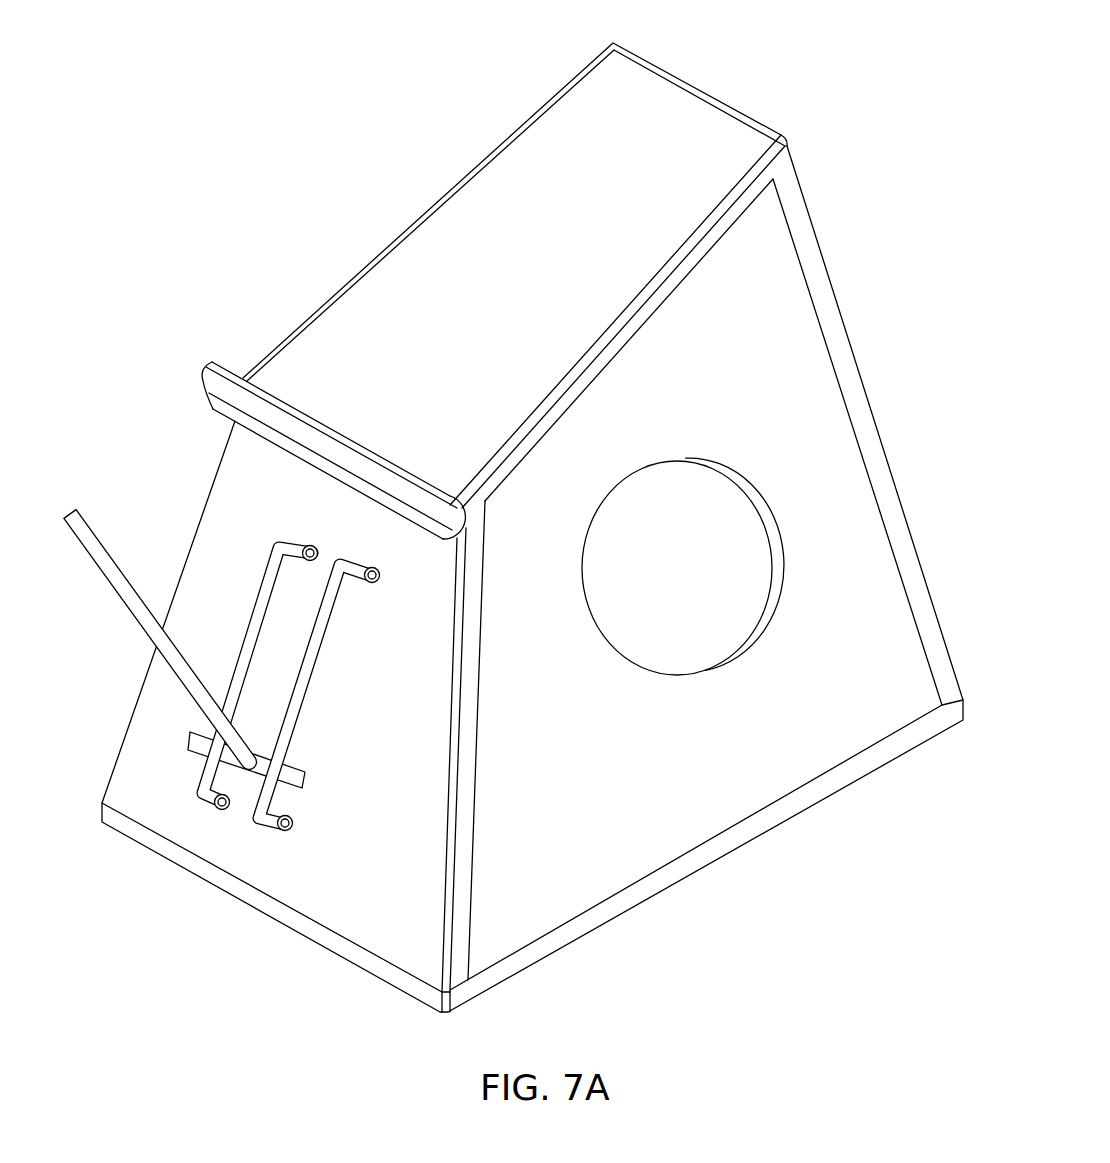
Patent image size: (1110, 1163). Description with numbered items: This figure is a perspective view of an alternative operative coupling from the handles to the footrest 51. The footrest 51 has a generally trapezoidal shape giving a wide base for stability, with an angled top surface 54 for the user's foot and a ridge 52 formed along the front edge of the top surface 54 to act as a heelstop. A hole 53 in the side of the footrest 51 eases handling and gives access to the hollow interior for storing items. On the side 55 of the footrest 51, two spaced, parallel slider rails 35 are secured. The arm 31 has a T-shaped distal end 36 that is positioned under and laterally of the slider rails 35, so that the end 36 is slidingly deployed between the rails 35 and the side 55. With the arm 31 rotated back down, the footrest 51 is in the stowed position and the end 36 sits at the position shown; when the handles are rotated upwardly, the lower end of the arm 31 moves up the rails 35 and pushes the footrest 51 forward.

The footrest 51 is at (513, 515).
The top surface 54 is at (571, 105).
The ridge 52 is at (228, 390).
The hole 53 is at (723, 482).
The side 55 is at (140, 712).
The arm 31 is at (110, 567).
The slider rails 35 is at (267, 588).
The distal end 36 is at (248, 767).